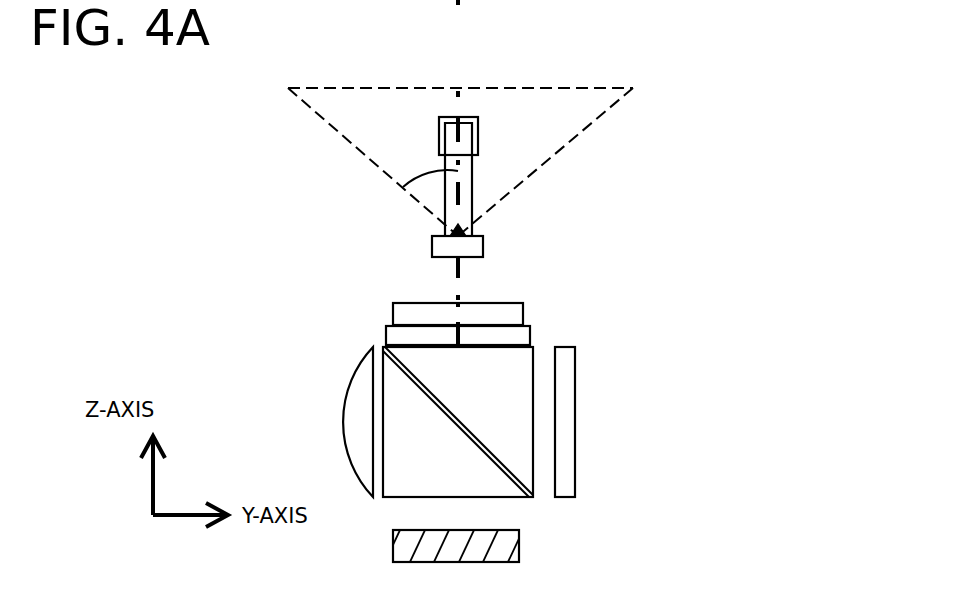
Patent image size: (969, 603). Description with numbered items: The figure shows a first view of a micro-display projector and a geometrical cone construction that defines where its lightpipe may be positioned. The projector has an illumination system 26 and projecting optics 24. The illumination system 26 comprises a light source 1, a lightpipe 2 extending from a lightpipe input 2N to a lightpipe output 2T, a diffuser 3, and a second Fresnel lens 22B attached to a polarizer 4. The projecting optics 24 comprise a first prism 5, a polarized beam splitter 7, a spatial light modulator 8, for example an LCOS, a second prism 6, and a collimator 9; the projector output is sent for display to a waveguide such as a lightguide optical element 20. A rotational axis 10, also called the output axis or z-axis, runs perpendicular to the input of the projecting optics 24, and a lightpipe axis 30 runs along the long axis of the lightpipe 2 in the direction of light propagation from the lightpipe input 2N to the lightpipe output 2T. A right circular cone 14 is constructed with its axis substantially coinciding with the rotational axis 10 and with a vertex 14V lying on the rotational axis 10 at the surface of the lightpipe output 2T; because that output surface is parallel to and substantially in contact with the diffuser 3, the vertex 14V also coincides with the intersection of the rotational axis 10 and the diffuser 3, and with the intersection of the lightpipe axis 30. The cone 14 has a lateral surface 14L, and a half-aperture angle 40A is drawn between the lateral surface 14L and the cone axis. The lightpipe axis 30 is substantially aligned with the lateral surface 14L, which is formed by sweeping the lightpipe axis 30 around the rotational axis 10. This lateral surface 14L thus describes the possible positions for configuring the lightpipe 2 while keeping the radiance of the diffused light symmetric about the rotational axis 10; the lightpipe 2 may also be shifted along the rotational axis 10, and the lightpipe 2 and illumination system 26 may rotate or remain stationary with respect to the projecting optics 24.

The rotational axis 10 is at (464, 20).
The lightpipe axis 30 is at (464, 195).
The right circular cone 14 is at (460, 162).
The lateral surface 14L is at (288, 88).
The vertex 14V is at (460, 246).
The half-aperture angle 40A is at (424, 185).
The light source 1 is at (478, 137).
The lightpipe 2 is at (472, 181).
The lightpipe input 2N is at (498, 147).
The lightpipe output 2T is at (500, 228).
The diffuser 3 is at (457, 247).
The illumination system 26 is at (740, 158).
The second Fresnel lens 22B is at (458, 314).
The polarizer 4 is at (458, 337).
The first prism 5 is at (458, 422).
The second prism 6 is at (396, 486).
The polarized beam splitter 7 is at (510, 473).
The spatial light modulator 8 is at (565, 422).
The collimator 9 is at (358, 422).
The projecting optics 24 is at (648, 415).
The lightguide optical element 20 is at (454, 546).